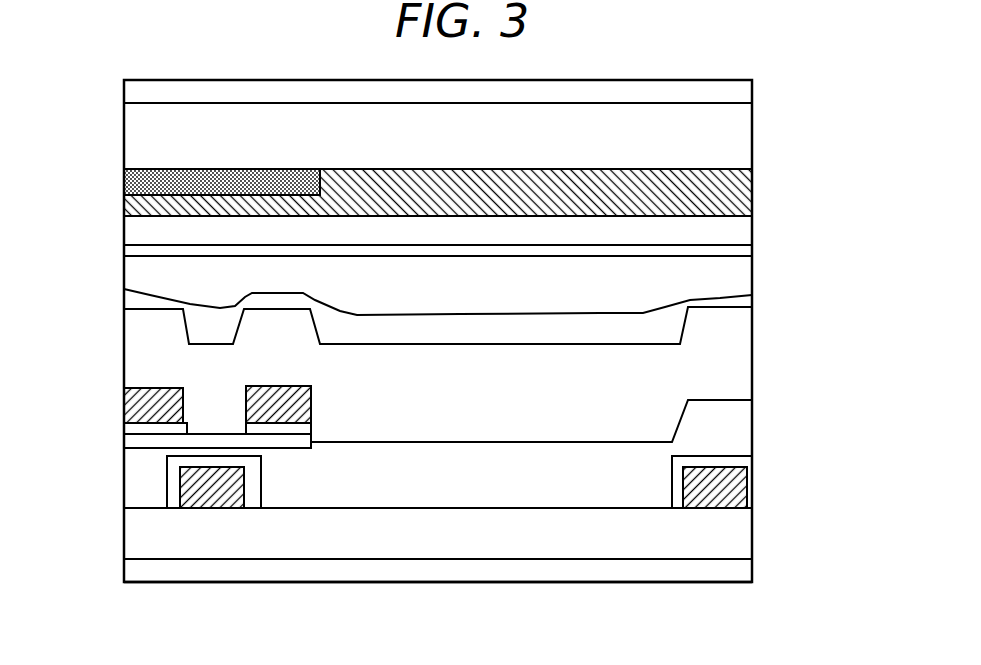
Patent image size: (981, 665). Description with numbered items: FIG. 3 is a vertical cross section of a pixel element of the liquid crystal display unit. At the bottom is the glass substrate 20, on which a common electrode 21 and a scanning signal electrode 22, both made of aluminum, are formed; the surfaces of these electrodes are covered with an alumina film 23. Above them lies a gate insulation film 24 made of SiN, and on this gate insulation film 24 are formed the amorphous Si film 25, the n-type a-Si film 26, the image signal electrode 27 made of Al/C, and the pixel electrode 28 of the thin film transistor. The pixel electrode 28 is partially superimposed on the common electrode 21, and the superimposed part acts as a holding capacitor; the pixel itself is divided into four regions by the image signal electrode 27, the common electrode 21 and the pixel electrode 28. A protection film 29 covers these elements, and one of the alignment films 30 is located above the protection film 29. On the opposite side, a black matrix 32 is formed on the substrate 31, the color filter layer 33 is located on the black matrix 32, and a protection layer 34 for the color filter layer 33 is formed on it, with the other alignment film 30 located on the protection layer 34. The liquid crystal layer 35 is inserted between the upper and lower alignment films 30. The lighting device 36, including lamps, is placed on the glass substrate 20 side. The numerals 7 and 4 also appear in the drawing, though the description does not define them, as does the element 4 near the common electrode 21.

The lighting device 36 is at (645, 90).
The substrate 31 is at (142, 132).
The black matrix 32 is at (126, 178).
The color filter layer 33 is at (725, 195).
The protection layer 34 is at (730, 230).
The liquid crystal layer 35 is at (727, 273).
The alignment films 30 is at (133, 302).
The protection film 29 is at (722, 365).
The image signal electrode 27 is at (137, 403).
The n-type a-Si film 26 is at (138, 428).
The pixel electrode 28 is at (308, 417).
The semiconductor layer 7 is at (285, 430).
The amorphous Si film 25 is at (153, 442).
The alumina film 23 is at (252, 497).
The scanning signal electrode 22 is at (215, 497).
The insulating film 4 is at (677, 500).
The common electrode 21 is at (733, 507).
The gate insulation film 24 is at (522, 483).
The glass substrate 20 is at (162, 535).